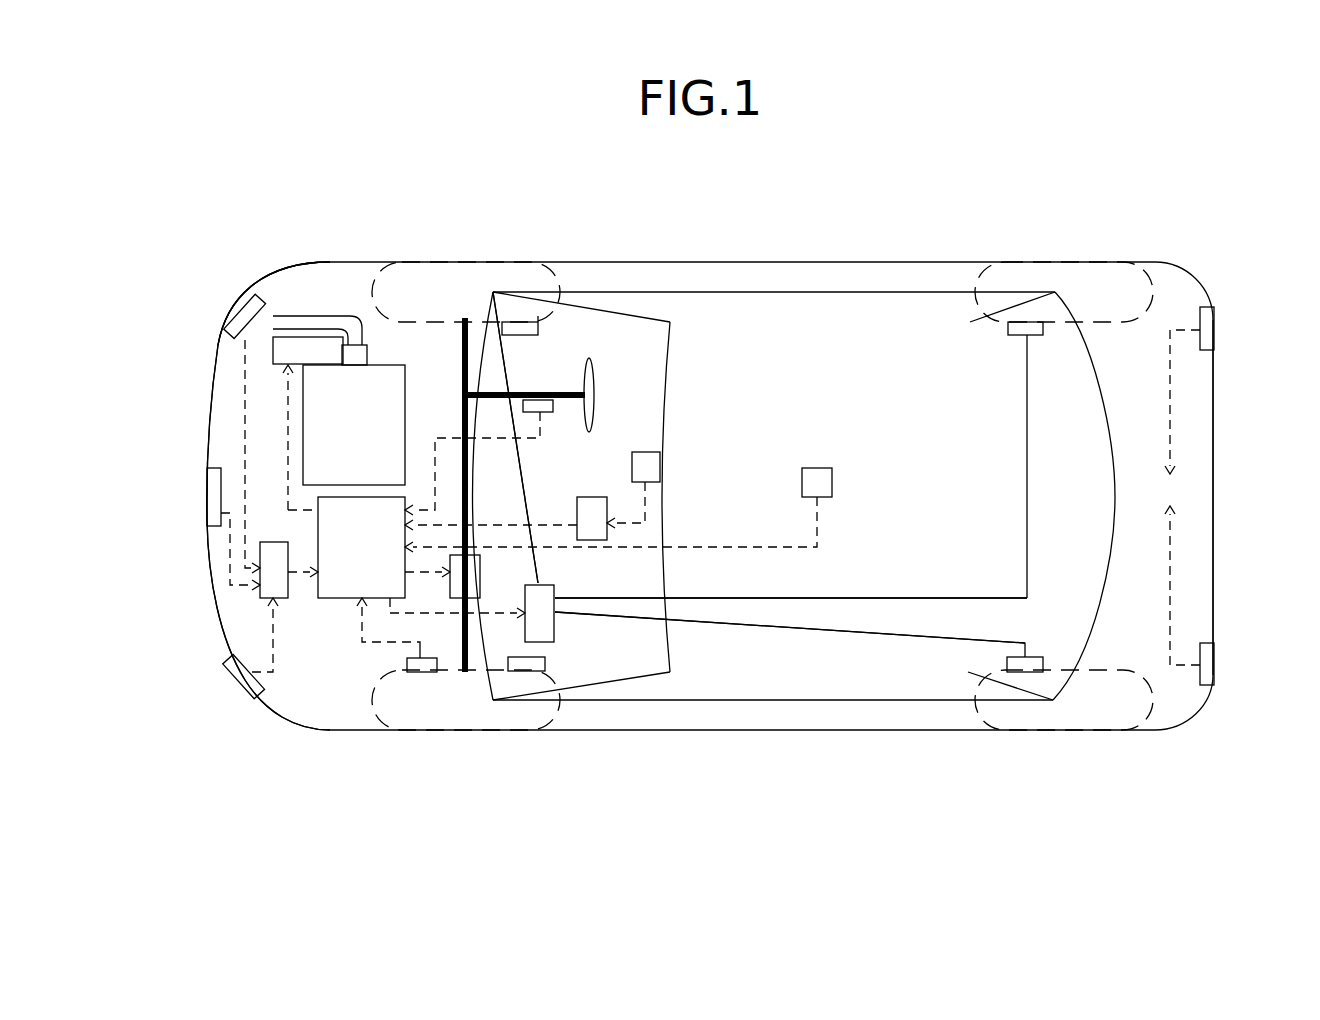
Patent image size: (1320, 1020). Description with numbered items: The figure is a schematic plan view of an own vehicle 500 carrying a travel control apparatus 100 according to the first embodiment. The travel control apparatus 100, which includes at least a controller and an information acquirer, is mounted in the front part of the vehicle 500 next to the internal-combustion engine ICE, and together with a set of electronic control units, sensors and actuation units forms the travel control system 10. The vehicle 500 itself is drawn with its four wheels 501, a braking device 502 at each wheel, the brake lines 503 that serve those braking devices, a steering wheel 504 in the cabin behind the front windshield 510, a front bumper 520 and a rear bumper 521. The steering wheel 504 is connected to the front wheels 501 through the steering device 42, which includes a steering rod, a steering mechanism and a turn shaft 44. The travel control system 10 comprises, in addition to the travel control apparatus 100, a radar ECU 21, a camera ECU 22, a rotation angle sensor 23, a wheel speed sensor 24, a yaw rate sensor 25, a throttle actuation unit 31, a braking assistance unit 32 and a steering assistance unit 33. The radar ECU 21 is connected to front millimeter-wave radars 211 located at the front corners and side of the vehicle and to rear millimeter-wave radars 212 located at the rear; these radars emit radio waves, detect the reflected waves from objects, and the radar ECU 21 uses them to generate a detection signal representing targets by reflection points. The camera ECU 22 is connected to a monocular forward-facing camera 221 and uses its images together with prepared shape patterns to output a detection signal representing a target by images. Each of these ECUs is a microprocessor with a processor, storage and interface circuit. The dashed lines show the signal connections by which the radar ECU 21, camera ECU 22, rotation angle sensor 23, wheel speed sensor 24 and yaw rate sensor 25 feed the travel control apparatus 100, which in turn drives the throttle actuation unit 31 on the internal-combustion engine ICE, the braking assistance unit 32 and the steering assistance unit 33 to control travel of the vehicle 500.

The vehicle 500 is at (795, 238).
The travel control system 10 is at (328, 695).
The front windshield 510 is at (660, 415).
The wheels 501 is at (440, 262).
The braking devices 502 is at (520, 334).
The brake lines 503 is at (535, 497).
The steering wheel 504 is at (593, 393).
The steering device 42 is at (452, 380).
The turn shaft 44 is at (464, 408).
The internal-combustion engine ICE is at (354, 425).
The throttle actuation unit 31 is at (320, 413).
The travel control apparatus 100 is at (361, 547).
The radar ECU 21 is at (289, 570).
The front millimeter-wave radars 211 is at (247, 300).
The rear millimeter-wave radars 212 is at (1214, 330).
The front bumper 520 is at (220, 366).
The rear bumper 521 is at (1216, 590).
The steering assistance unit 33 is at (442, 576).
The braking assistance unit 32 is at (472, 613).
The camera ECU 22 is at (506, 518).
The forward-facing camera 221 is at (662, 462).
The yaw rate sensor 25 is at (618, 510).
The rotation angle sensor 23 is at (548, 413).
The wheel speed sensor 24 is at (408, 660).